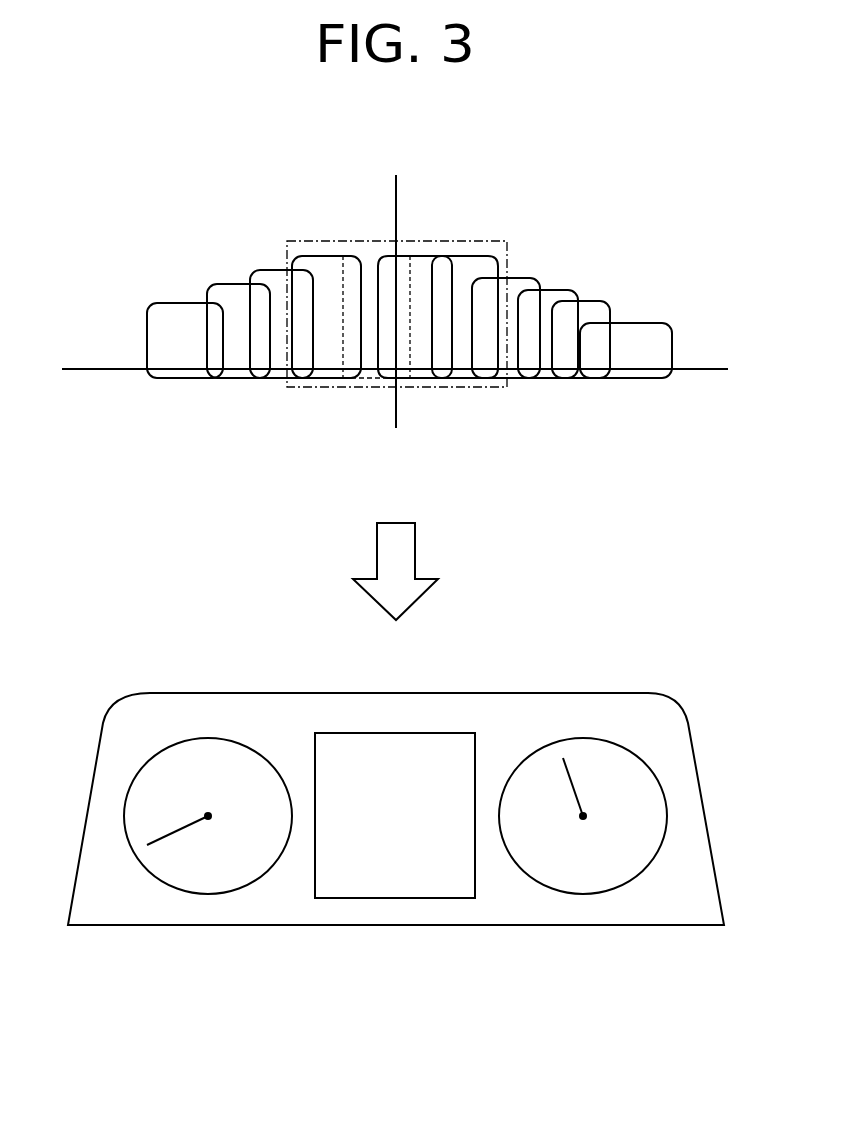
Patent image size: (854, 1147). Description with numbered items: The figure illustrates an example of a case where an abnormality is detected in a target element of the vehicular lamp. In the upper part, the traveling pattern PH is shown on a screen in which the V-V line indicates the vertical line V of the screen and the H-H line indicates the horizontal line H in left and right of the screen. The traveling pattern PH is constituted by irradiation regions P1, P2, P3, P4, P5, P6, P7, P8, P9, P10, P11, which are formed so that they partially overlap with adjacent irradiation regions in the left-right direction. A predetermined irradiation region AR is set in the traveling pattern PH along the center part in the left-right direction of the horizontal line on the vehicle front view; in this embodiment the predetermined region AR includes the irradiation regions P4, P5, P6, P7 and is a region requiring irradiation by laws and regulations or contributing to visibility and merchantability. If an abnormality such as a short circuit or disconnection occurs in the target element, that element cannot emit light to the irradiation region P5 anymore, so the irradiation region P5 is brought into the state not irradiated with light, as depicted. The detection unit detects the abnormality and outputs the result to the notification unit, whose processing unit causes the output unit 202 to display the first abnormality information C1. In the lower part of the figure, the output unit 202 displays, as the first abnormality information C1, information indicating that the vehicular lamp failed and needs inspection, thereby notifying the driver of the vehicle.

The irradiation region P1 is at (155, 303).
The irradiation region P2 is at (227, 283).
The irradiation region P3 is at (267, 269).
The irradiation region P4 is at (318, 255).
The irradiation region P5 is at (368, 255).
The irradiation region P6 is at (422, 255).
The irradiation region P7 is at (472, 255).
The irradiation region P8 is at (517, 277).
The irradiation region P9 is at (558, 289).
The irradiation region P10 is at (597, 300).
The irradiation region P11 is at (647, 322).
The traveling pattern PH is at (410, 285).
The predetermined irradiation region AR is at (447, 241).
The vertical line V is at (396, 300).
The horizontal line H is at (395, 371).
The output unit 202 is at (458, 733).
The first abnormality information C1 is at (403, 877).